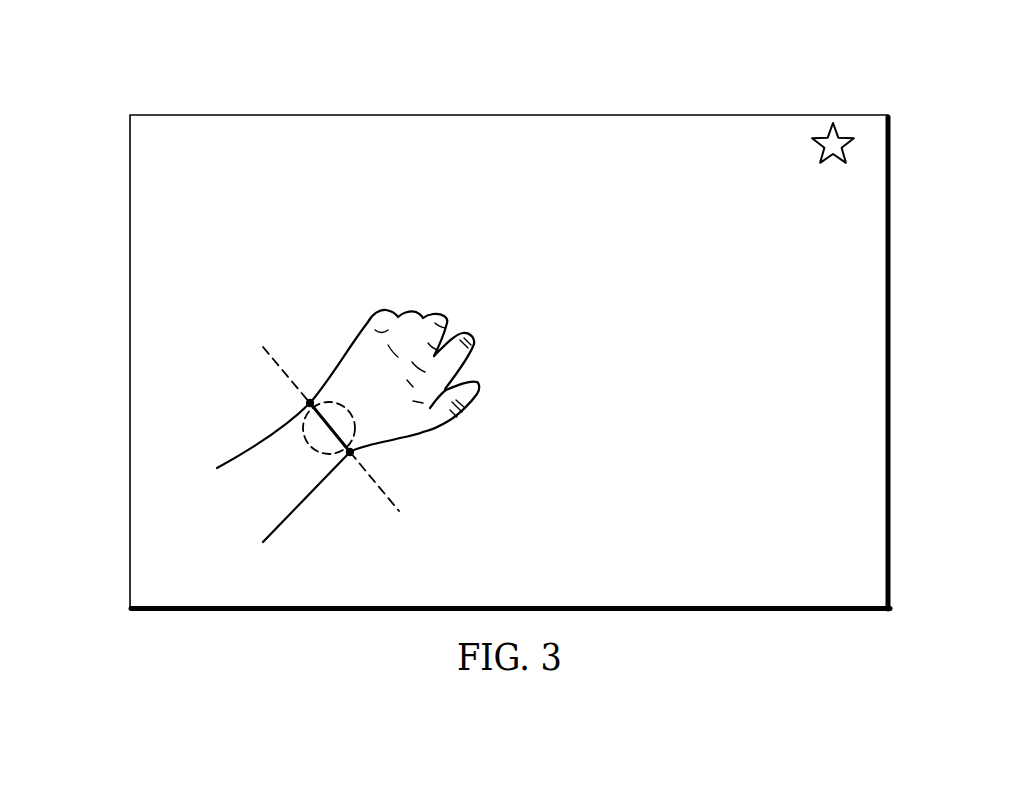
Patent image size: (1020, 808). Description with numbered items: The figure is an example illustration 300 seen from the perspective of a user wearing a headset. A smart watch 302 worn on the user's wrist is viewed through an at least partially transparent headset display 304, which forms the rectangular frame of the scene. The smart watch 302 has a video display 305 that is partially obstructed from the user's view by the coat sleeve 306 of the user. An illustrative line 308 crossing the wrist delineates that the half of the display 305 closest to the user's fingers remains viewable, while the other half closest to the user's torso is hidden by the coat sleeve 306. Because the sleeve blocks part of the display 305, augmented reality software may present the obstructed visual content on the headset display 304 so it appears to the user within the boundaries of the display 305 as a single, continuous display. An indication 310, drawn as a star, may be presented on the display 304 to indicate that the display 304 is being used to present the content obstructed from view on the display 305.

The example illustration 300 is at (121, 67).
The smart watch 302 is at (421, 434).
The headset display 304 is at (130, 360).
The video display 305 is at (345, 418).
The coat sleeve 306 is at (300, 507).
The illustrative line 308 is at (277, 363).
The indication 310 is at (812, 151).